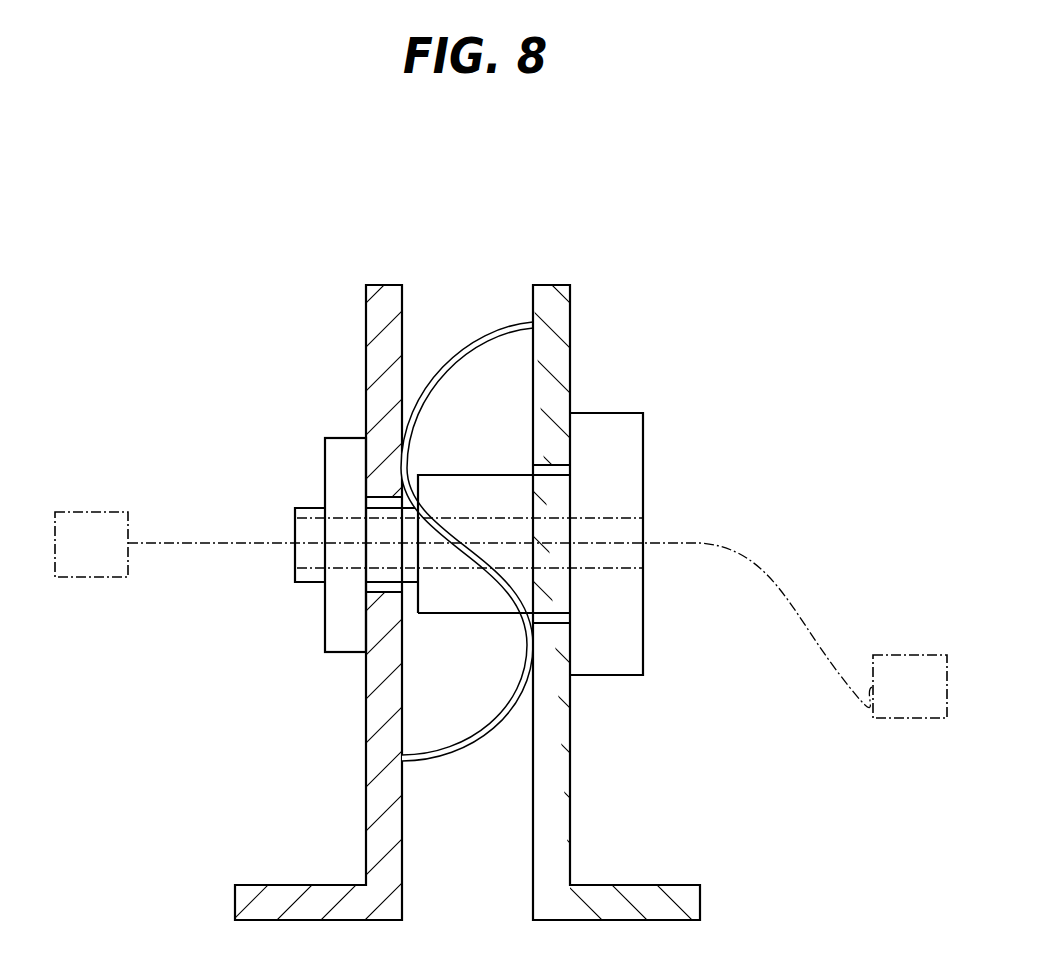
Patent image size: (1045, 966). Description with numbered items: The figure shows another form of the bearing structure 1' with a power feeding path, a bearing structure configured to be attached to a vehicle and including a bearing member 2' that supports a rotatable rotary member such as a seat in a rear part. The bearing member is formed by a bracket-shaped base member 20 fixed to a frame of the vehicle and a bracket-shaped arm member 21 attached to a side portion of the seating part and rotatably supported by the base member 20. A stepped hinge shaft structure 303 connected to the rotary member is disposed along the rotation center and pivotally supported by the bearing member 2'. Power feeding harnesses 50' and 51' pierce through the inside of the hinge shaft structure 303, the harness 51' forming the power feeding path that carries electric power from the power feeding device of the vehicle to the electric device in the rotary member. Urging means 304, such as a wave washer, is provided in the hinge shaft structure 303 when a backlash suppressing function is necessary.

The bearing structure 1' is at (522, 575).
The bearing member 2' is at (522, 540).
The base member 20 is at (558, 786).
The arm member 21 is at (382, 802).
The hinge shaft structure 303 is at (650, 442).
The urging means 304 is at (480, 337).
The power feeding harness 50' is at (910, 613).
The power feeding harness 51' is at (130, 473).